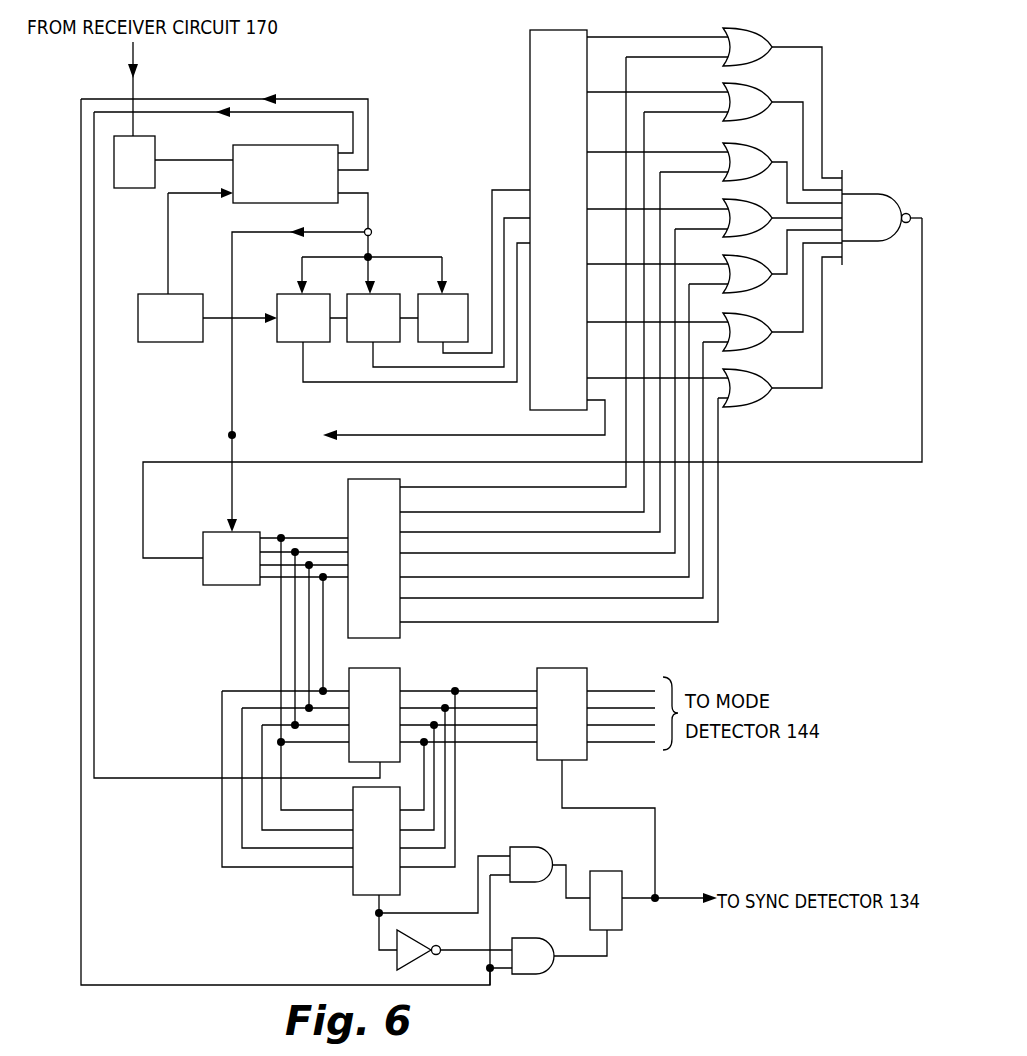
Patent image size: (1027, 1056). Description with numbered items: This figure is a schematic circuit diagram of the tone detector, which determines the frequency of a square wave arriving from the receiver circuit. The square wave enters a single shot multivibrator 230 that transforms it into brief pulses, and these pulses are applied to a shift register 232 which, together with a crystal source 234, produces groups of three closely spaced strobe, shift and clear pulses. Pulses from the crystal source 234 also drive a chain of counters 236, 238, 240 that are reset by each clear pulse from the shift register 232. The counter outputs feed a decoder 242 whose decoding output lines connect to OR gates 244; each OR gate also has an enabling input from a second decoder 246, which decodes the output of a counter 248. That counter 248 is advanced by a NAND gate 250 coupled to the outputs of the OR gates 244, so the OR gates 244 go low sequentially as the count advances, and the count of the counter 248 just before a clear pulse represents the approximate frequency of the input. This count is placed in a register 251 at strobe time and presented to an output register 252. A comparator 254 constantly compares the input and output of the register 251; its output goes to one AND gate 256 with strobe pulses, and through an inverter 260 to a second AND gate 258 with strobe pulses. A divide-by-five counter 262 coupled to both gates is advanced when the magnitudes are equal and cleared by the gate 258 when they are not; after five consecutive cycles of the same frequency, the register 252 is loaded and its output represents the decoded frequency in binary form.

The single shot multivibrator 230 is at (133, 190).
The shift register 232 is at (243, 190).
The crystal source 234 is at (150, 302).
The counter 236 is at (290, 300).
The counter 238 is at (390, 300).
The counter 240 is at (459, 298).
The decoder 242 is at (543, 72).
The OR gates 244 is at (752, 157).
The decoder 246 is at (397, 628).
The counter 248 is at (212, 575).
The NAND gate 250 is at (865, 202).
The register 251 is at (397, 672).
The output register 252 is at (562, 673).
The comparator 254 is at (357, 878).
The AND gate 256 is at (530, 853).
The AND gate 258 is at (537, 967).
The inverter 260 is at (396, 963).
The divide-by-5 counter 262 is at (622, 915).